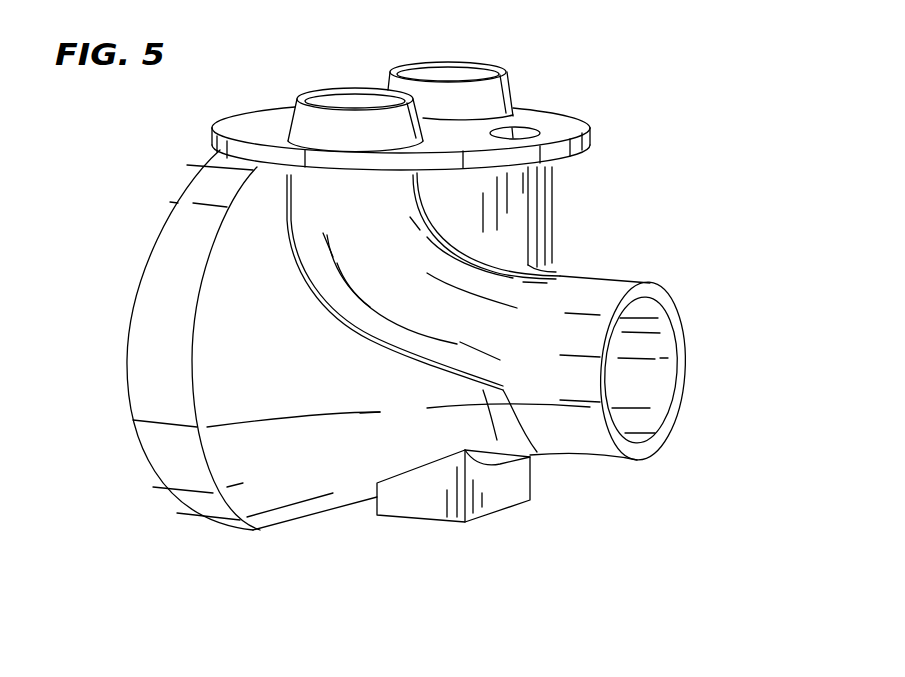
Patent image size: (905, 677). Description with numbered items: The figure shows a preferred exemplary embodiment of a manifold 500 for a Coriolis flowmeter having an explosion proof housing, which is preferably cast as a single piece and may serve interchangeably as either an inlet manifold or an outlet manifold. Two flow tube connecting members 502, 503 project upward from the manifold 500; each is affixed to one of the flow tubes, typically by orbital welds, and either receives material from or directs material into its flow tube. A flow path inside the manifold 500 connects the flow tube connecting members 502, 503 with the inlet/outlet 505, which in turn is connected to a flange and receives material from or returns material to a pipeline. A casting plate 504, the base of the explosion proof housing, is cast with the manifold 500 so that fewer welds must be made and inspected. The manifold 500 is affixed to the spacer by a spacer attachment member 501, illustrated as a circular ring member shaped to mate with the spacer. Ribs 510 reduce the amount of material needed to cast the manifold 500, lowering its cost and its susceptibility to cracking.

The manifold 500 is at (667, 132).
The spacer attachment member 501 is at (147, 367).
The flow tube connecting member 502 is at (452, 62).
The flow tube connecting member 503 is at (342, 88).
The casting plate 504 is at (560, 127).
The inlet/outlet 505 is at (645, 387).
The ribs 510 is at (547, 198).